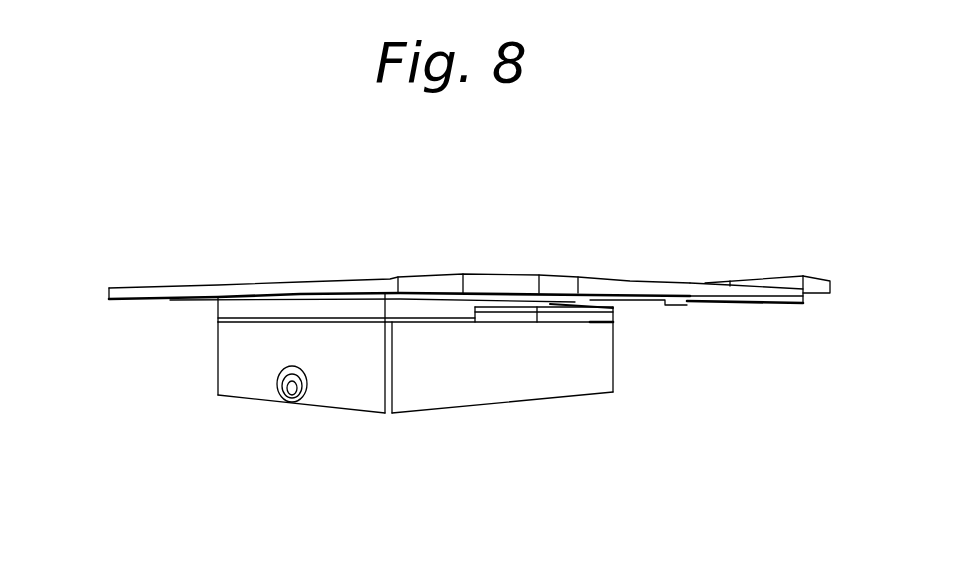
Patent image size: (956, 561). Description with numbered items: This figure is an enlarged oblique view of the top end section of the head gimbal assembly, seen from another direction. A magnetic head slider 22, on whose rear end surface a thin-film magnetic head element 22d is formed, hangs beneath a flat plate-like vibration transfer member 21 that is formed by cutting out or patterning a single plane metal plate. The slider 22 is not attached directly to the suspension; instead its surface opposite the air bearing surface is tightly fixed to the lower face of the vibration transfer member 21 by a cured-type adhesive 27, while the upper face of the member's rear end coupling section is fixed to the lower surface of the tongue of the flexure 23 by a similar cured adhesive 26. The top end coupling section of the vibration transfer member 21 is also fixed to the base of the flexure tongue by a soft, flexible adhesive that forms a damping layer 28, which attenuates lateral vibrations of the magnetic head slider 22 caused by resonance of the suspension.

The vibration transfer member 21 is at (228, 309).
The magnetic head slider 22 is at (497, 387).
The thin-film magnetic head element 22d is at (290, 403).
The flexure 23 is at (645, 292).
The adhesive 26 is at (575, 303).
The adhesive 27 is at (240, 320).
The damping layer 28 is at (298, 294).